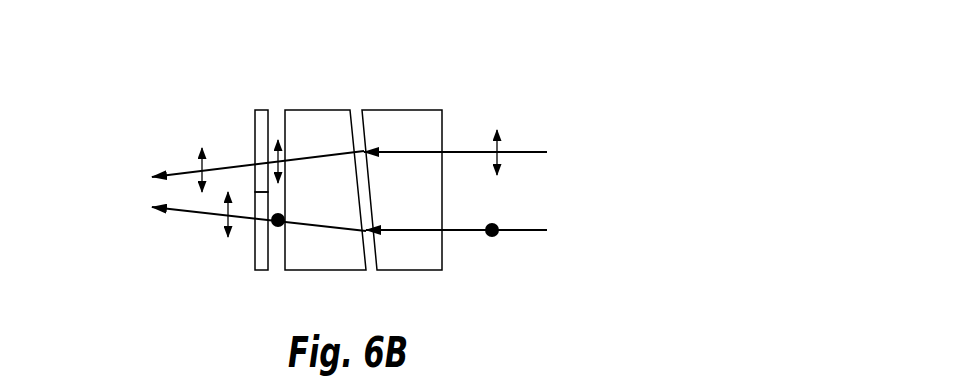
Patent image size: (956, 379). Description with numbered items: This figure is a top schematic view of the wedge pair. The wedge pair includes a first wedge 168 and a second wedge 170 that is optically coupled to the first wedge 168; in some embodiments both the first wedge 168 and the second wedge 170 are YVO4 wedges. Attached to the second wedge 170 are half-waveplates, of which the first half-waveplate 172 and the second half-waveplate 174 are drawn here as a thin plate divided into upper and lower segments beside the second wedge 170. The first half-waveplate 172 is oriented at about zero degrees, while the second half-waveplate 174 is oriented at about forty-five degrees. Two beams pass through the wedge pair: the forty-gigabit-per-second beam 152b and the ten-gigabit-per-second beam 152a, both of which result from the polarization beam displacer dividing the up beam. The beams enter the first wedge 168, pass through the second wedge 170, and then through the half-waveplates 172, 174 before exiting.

The 10 Gb/s beam 152a is at (527, 230).
The 40 Gb/s beam 152b is at (530, 152).
The first wedge 168 is at (404, 118).
The second wedge 170 is at (318, 118).
The first half-waveplate 172 is at (260, 116).
The second half-waveplate 174 is at (261, 266).